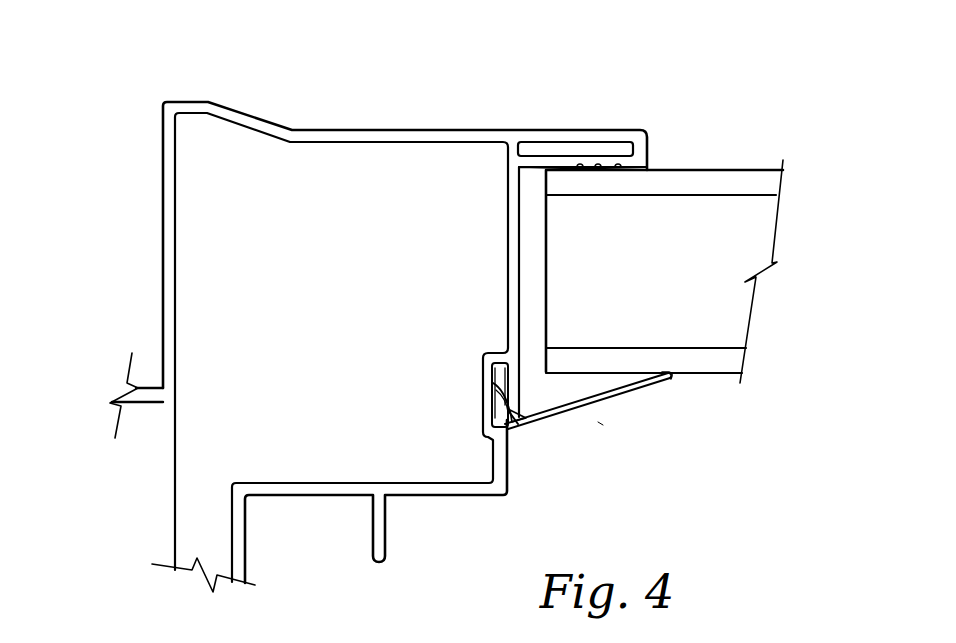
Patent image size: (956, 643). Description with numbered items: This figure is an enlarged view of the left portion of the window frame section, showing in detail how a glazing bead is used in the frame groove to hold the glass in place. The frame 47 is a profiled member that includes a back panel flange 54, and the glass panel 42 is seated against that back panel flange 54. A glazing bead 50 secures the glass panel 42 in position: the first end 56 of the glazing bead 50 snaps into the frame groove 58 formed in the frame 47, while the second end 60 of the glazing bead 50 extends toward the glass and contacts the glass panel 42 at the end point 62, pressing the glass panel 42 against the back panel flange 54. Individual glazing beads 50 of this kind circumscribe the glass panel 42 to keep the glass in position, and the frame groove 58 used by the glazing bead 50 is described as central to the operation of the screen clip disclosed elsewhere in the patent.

The glass panel 42 is at (725, 170).
The frame 47 is at (432, 197).
The glazing bead 50 is at (598, 420).
The back panel flange 54 is at (641, 130).
The first end 56 is at (521, 420).
The frame groove 58 is at (493, 405).
The second end 60 is at (623, 398).
The end point 62 is at (672, 378).